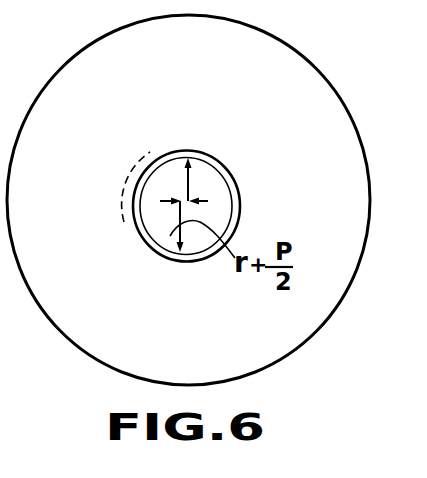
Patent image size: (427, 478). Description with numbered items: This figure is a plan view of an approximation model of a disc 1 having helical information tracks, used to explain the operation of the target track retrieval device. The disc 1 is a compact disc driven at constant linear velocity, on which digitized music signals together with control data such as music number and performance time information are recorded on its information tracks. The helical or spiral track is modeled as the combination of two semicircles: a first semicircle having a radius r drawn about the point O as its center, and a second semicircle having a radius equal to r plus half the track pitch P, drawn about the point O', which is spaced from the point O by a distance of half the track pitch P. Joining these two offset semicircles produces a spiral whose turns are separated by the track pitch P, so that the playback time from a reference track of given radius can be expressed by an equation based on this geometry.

The disc 1 is at (311, 66).
The radius r is at (188, 182).
The center point O is at (203, 179).
The offset center point O' is at (163, 226).
The track pitch P is at (191, 203).